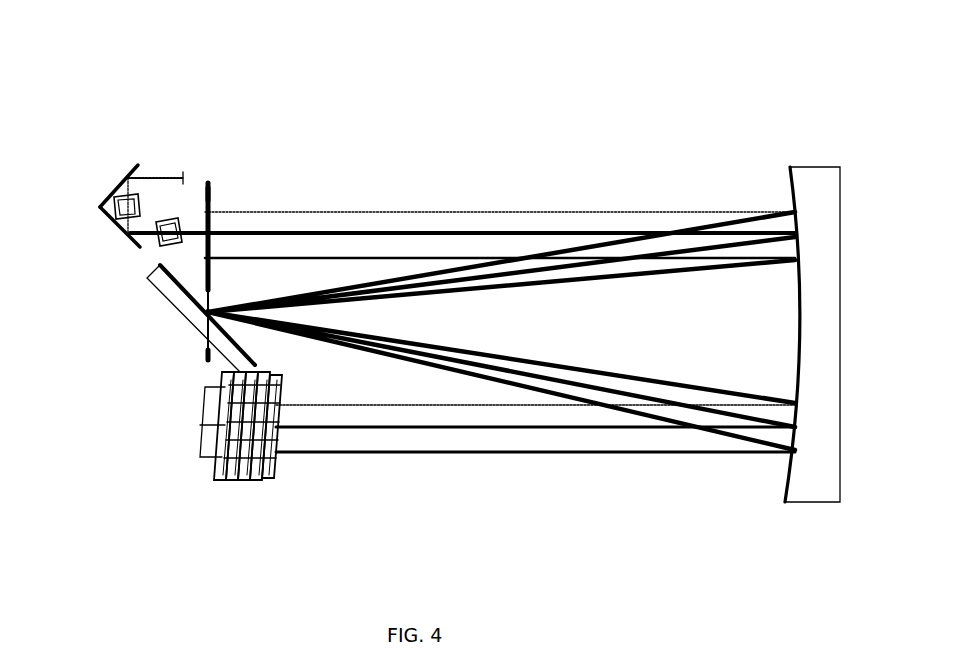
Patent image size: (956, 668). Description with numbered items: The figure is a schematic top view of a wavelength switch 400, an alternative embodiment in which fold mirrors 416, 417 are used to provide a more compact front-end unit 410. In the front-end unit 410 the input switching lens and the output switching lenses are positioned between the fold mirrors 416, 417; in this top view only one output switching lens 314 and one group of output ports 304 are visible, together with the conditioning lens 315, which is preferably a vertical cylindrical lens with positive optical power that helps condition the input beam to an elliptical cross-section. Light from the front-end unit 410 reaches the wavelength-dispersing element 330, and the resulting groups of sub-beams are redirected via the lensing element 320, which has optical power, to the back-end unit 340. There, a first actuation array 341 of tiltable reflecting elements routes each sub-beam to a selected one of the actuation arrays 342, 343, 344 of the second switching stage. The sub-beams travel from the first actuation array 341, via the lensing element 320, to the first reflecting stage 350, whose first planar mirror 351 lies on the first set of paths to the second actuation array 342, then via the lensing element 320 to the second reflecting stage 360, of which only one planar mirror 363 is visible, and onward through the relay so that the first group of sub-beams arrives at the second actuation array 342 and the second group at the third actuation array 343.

The wavelength switch 400 is at (73, 59).
The front-end unit 410 is at (126, 190).
The group of output ports 304 is at (175, 170).
The second reflecting stage 360 is at (224, 158).
The planar mirror 363 is at (212, 195).
The fold mirror 417 is at (120, 182).
The output switching lens 314 is at (140, 204).
The fold mirror 416 is at (112, 223).
The conditioning lens 315 is at (158, 239).
The wavelength-dispersing element 330 is at (150, 290).
The first planar mirror 351 is at (205, 321).
The first reflecting stage 350 is at (130, 342).
The back-end unit 340 is at (245, 500).
The first actuation array 341 is at (265, 481).
The second actuation array 342 is at (248, 481).
The third actuation array 343 is at (233, 481).
The actuation array 344 is at (222, 481).
The lensing element 320 is at (817, 503).